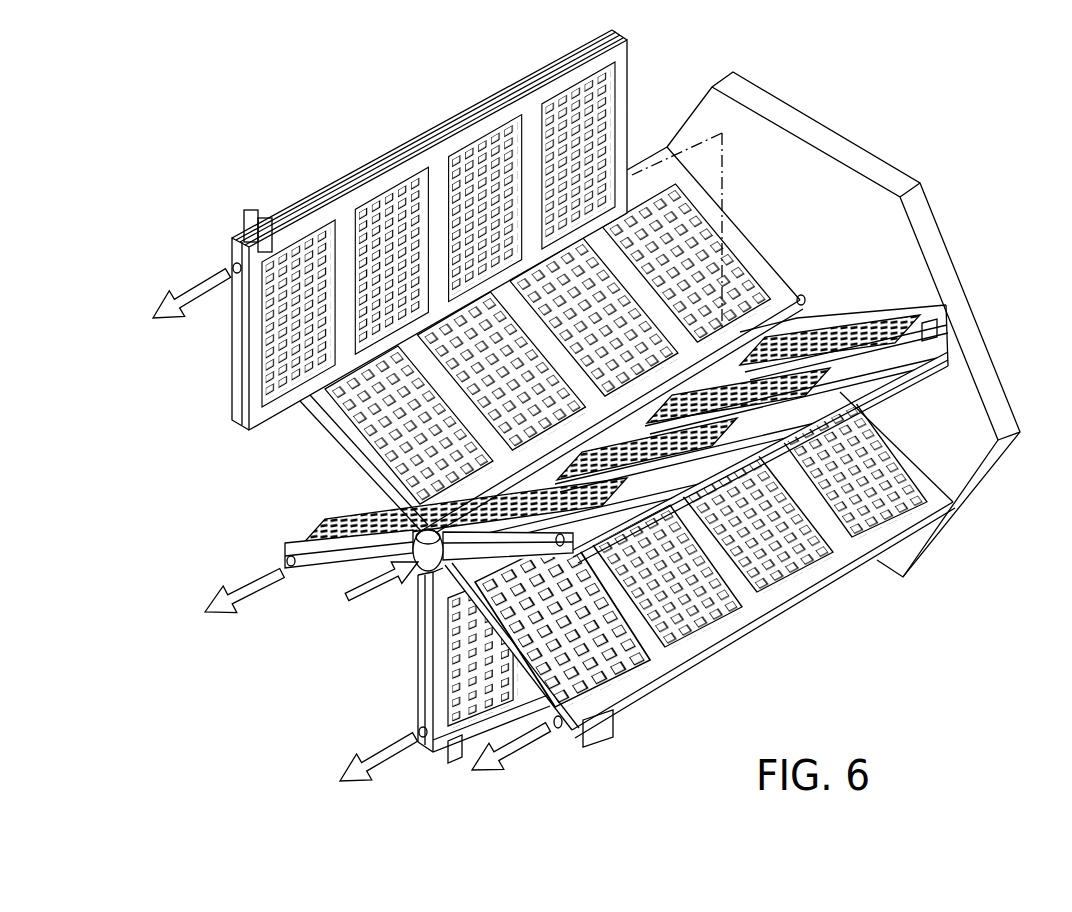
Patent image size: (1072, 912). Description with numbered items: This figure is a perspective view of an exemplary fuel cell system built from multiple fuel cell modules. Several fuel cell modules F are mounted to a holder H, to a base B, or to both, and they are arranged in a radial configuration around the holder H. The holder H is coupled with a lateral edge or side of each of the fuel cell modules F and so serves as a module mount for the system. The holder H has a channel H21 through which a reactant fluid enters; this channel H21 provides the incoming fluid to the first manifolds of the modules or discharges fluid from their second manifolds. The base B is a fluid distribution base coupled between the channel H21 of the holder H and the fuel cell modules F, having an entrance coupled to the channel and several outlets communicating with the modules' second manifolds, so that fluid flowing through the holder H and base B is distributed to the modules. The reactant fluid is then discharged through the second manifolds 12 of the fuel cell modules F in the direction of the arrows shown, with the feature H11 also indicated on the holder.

The base B is at (892, 175).
The holder H is at (815, 312).
The pivot hole of holder H11 is at (801, 295).
The channel H21 is at (413, 578).
The fuel cell module F is at (440, 136).
The second manifold 12 is at (233, 263).